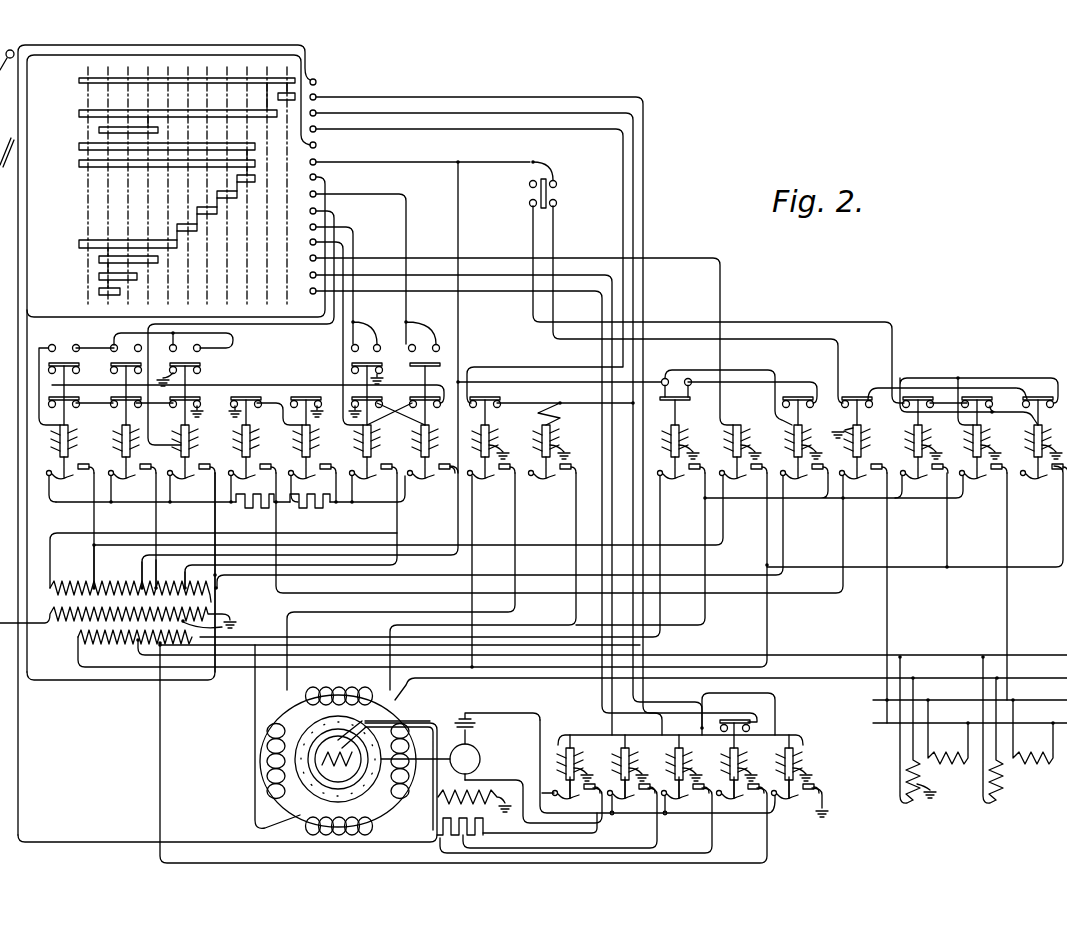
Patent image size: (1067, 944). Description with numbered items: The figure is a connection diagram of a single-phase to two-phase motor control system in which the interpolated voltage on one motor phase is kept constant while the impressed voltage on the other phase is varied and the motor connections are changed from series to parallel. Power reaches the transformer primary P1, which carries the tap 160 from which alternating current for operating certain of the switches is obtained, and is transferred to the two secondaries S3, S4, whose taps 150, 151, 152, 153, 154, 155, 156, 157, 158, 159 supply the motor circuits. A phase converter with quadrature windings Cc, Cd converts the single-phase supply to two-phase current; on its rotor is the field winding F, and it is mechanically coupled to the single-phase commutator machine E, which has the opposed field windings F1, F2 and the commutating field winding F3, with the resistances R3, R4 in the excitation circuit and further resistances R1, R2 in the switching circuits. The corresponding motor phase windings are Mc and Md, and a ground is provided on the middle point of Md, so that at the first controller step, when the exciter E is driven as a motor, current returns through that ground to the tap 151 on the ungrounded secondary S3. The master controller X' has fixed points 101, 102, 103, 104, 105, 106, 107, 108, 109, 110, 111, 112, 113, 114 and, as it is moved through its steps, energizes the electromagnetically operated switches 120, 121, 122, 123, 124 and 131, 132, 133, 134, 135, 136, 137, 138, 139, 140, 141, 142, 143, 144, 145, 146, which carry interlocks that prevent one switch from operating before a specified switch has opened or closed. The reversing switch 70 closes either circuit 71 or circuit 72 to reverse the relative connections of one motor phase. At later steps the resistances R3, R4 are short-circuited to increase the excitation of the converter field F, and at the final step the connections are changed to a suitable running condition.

The master controller X' is at (218, 443).
The reversing switch 70 is at (540, 178).
The circuit 71 is at (529, 190).
The circuit 72 is at (557, 194).
The fixed point of master controller 101 is at (316, 79).
The fixed point of master controller 102 is at (316, 94).
The fixed point of master controller 103 is at (316, 110).
The fixed point of master controller 104 is at (316, 126).
The fixed point of master controller 105 is at (316, 142).
The fixed point of master controller 106 is at (316, 159).
The fixed point of master controller 107 is at (301, 172).
The fixed point of master controller 108 is at (361, 265).
The fixed point of master controller 109 is at (241, 324).
The fixed point of master controller 110 is at (332, 281).
The fixed point of master controller 111 is at (325, 329).
The fixed point of master controller 112 is at (510, 337).
The fixed point of master controller 113 is at (449, 501).
The fixed point of master controller 114 is at (474, 509).
The switch 120 is at (745, 759).
The switch 121 is at (580, 767).
The switch 122 is at (635, 767).
The switch 123 is at (689, 767).
The switch 124 is at (800, 776).
The switch 131 is at (63, 467).
The switch 132 is at (124, 467).
The switch 133 is at (183, 509).
The switch 134 is at (258, 449).
The switch 135 is at (306, 449).
The switch 136 is at (380, 424).
The switch 137 is at (423, 412).
The switch 138 is at (481, 532).
The switch 139 is at (546, 452).
The switch 140 is at (676, 429).
The switch 141 is at (737, 452).
The switch 142 is at (798, 438).
The switch 143 is at (858, 560).
The switch 144 is at (918, 482).
The switch 145 is at (977, 548).
The switch 146 is at (1038, 438).
The tap 150 is at (89, 660).
The tap 151 is at (127, 652).
The tap 152 is at (163, 647).
The tap 153 is at (206, 638).
The tap 154 is at (52, 583).
The tap 155 is at (84, 567).
The tap 156 is at (138, 575).
The tap 157 is at (155, 576).
The tap 158 is at (197, 579).
The tap 159 is at (218, 588).
The tap 160 is at (222, 627).
The secondary winding S4 is at (119, 590).
The transformer primary P1 is at (118, 616).
The secondary winding S3 is at (117, 643).
The resistance R1 is at (255, 511).
The resistance R2 is at (310, 511).
The resistance R3 is at (473, 826).
The resistance R4 is at (407, 833).
The field winding F is at (323, 750).
The converter phase winding Cc is at (267, 785).
The converter phase winding Cd is at (350, 832).
The commutator machine E is at (478, 748).
The field winding F1 is at (480, 792).
The field winding F2 is at (440, 795).
The commutating field winding F3 is at (491, 719).
The motor phase winding Mc is at (1033, 770).
The motor phase winding Md is at (983, 808).